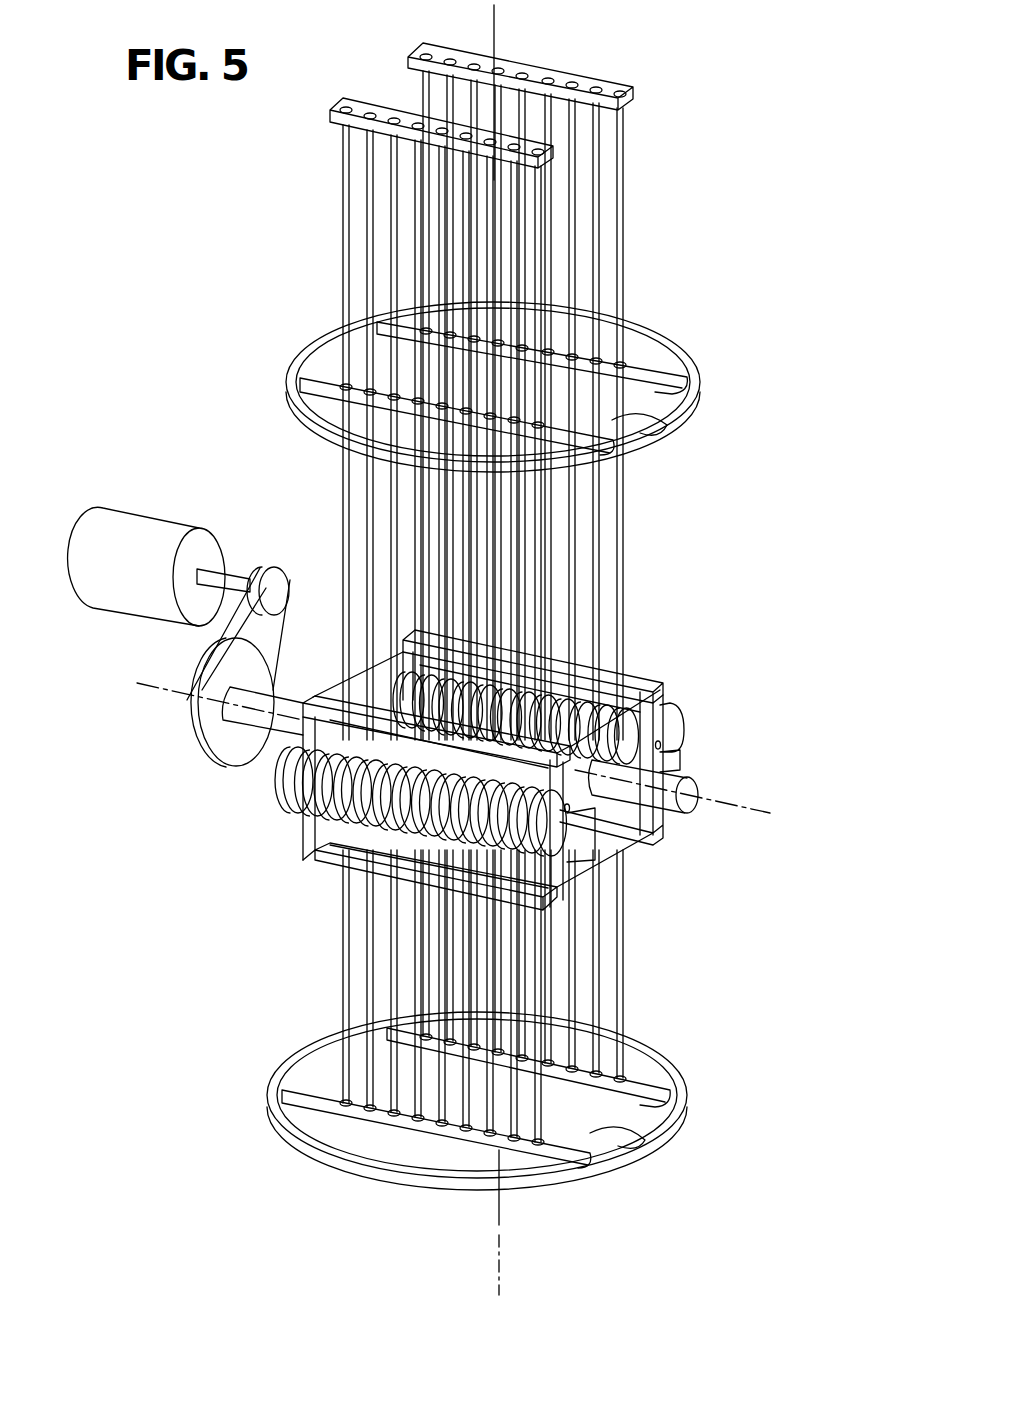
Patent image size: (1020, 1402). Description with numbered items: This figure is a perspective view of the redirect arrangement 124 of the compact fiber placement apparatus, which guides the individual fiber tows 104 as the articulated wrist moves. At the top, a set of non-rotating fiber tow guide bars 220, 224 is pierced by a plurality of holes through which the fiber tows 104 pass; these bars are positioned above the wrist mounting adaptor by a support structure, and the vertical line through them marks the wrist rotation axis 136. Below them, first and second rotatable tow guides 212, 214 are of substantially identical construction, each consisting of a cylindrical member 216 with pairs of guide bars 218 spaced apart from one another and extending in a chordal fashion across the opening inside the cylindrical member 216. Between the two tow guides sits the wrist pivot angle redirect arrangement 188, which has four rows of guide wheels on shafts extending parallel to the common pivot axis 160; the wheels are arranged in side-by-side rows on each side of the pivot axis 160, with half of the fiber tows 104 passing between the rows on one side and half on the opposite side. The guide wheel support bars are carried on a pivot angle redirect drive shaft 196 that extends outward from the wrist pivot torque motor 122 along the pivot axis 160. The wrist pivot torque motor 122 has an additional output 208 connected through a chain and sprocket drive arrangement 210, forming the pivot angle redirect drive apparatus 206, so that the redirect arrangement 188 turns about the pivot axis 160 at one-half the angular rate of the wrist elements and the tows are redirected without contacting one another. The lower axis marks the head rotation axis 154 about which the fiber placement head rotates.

The fiber tows 104 is at (638, 232).
The wrist pivot torque motor 122 is at (152, 527).
The redirect arrangement 124 is at (735, 158).
The wrist rotation axis 136 is at (494, 25).
The head rotation axis 154 is at (500, 1272).
The common pivot axis 160 is at (712, 800).
The wrist pivot angle redirect arrangement 188 is at (715, 772).
The pivot angle redirect drive shaft 196 is at (290, 725).
The pivot angle redirect drive apparatus 206 is at (170, 766).
The additional output 208 is at (235, 585).
The chain and sprocket drive arrangement 210 is at (155, 710).
The first rotatable tow guide 212 is at (678, 1080).
The second rotatable tow guide 214 is at (697, 370).
The cylindrical member 216 is at (666, 336).
The guide bars 218 is at (680, 392).
The non-rotating fiber tow guide bar 220 is at (636, 93).
The non-rotating fiber tow guide bar 224 is at (332, 113).